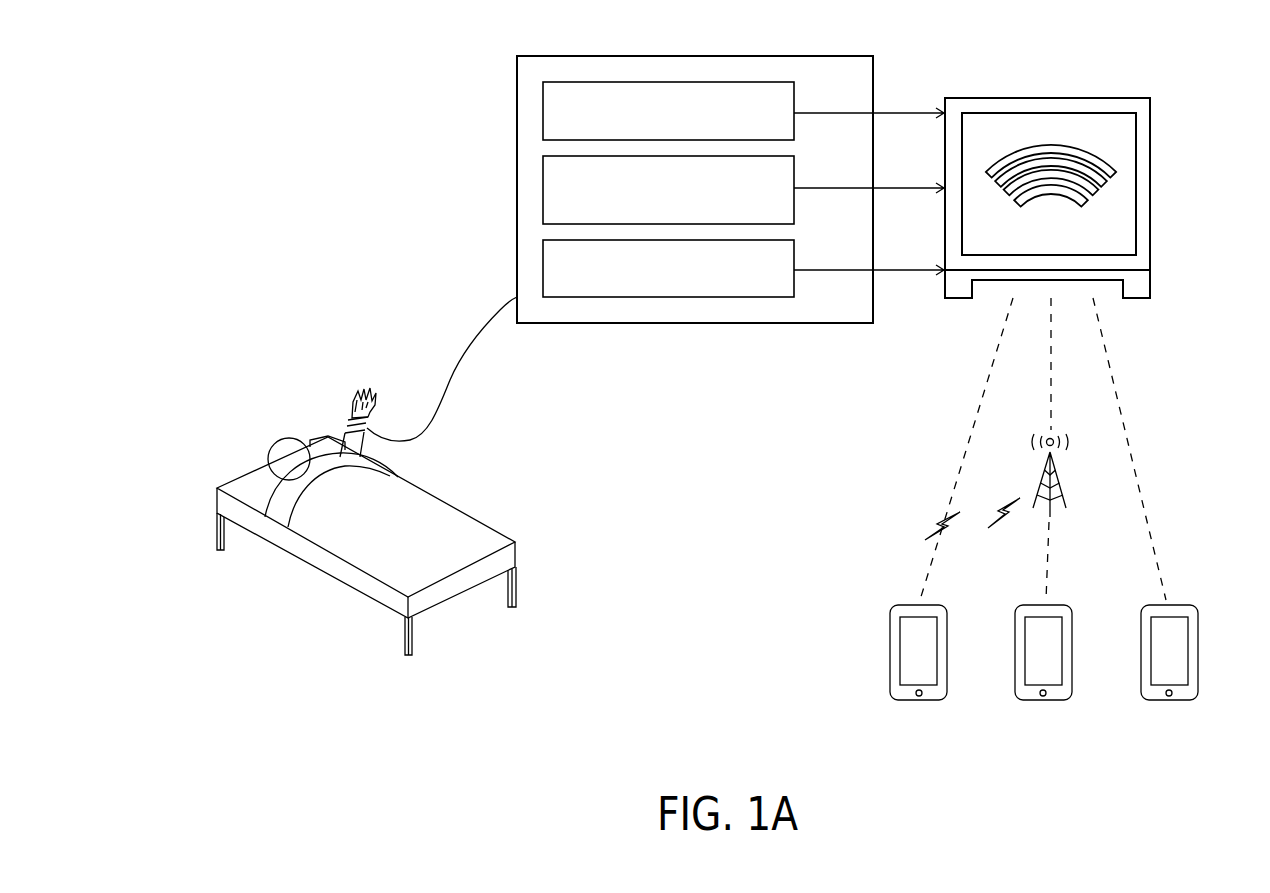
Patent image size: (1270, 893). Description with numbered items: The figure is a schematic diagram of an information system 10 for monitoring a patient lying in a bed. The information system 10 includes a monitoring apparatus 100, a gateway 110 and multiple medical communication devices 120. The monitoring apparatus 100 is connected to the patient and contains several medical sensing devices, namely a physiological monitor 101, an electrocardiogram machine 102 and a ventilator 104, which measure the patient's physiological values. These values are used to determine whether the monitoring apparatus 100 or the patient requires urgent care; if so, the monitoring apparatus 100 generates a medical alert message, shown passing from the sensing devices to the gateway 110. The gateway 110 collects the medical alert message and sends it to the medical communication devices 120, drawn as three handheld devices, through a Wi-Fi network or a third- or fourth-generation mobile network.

The information system 10 is at (268, 125).
The monitoring apparatus 100 is at (517, 68).
The physiological monitor 101 is at (542, 110).
The electrocardiogram machine 102 is at (542, 185).
The ventilator 104 is at (542, 268).
The gateway 110 is at (1042, 97).
The medical communication devices 120 is at (1217, 710).